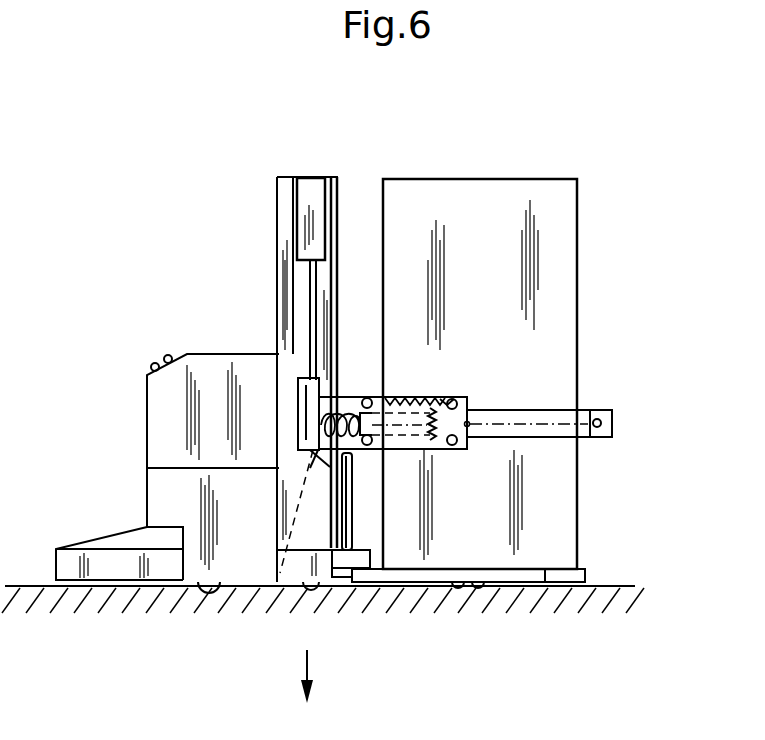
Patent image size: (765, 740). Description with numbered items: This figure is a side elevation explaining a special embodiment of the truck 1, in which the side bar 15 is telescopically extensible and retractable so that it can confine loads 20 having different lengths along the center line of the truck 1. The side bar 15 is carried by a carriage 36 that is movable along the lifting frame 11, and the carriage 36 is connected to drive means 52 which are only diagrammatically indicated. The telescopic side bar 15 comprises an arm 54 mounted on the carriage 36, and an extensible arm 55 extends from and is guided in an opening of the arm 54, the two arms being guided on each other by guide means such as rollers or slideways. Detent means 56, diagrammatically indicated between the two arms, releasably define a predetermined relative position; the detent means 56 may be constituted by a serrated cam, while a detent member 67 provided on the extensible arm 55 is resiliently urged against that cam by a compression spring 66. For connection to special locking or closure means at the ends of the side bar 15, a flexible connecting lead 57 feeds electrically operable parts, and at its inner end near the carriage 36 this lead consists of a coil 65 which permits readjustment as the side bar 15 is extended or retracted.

The truck 1 is at (147, 429).
The lifting frame 11 is at (318, 218).
The drive means 52 is at (300, 237).
The carriage 36 is at (303, 382).
The coil 65 is at (345, 423).
The arm 54 is at (418, 442).
The detent member 67 is at (432, 402).
The detent means 56 is at (450, 397).
The connecting lead 57 is at (467, 423).
The side bar 15 is at (522, 407).
The compression spring 66 is at (468, 424).
The extensible arm 55 is at (600, 438).
The load 20 is at (547, 210).